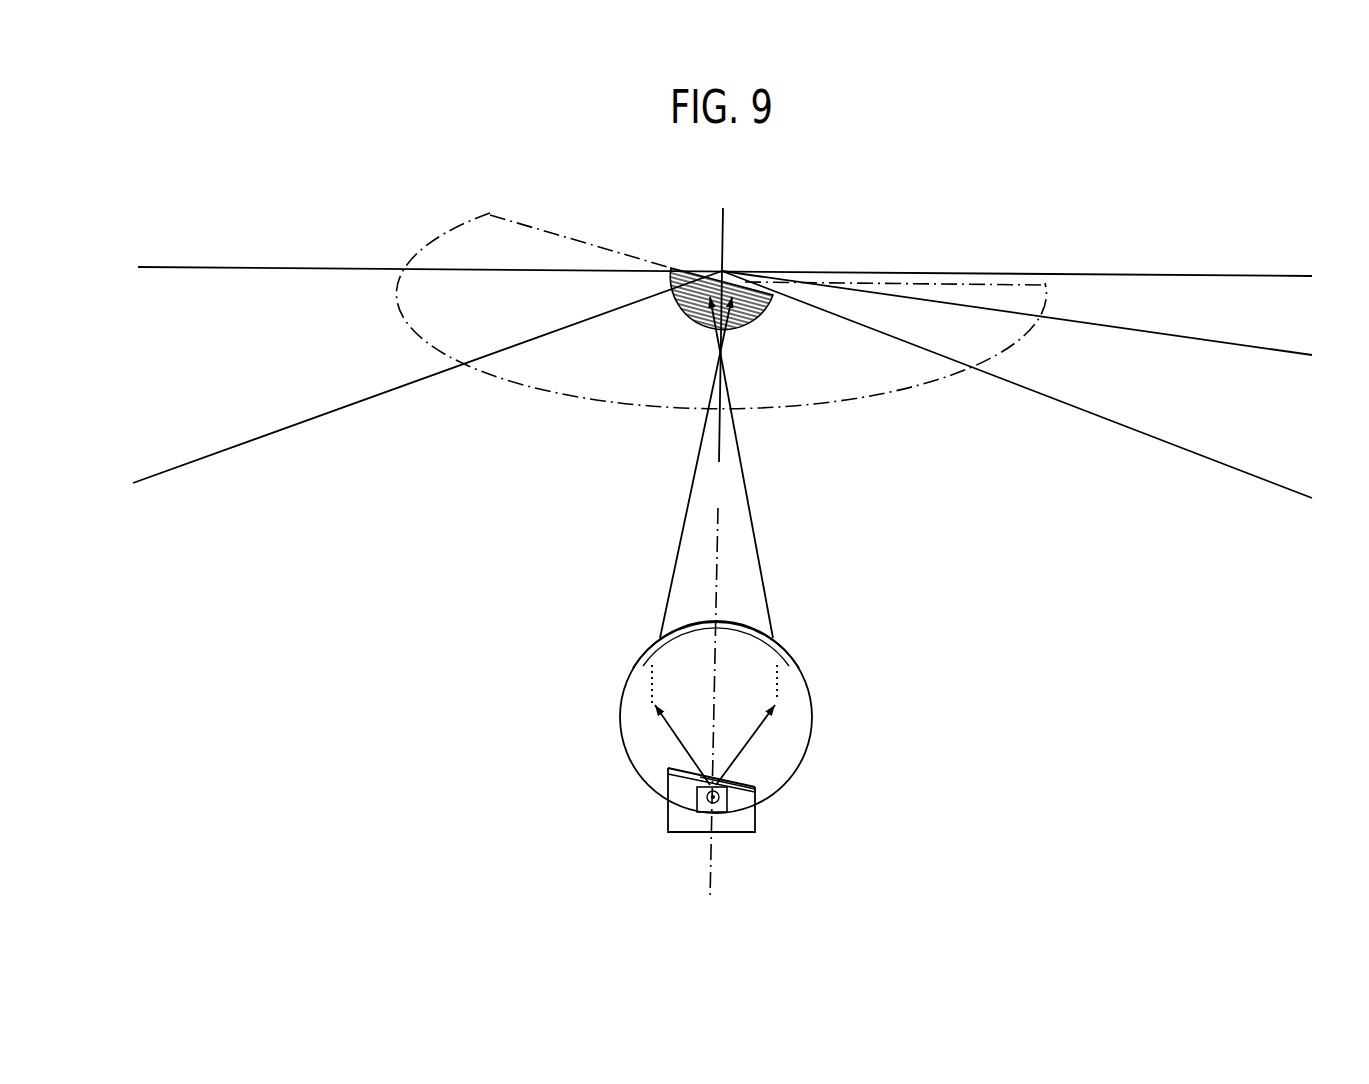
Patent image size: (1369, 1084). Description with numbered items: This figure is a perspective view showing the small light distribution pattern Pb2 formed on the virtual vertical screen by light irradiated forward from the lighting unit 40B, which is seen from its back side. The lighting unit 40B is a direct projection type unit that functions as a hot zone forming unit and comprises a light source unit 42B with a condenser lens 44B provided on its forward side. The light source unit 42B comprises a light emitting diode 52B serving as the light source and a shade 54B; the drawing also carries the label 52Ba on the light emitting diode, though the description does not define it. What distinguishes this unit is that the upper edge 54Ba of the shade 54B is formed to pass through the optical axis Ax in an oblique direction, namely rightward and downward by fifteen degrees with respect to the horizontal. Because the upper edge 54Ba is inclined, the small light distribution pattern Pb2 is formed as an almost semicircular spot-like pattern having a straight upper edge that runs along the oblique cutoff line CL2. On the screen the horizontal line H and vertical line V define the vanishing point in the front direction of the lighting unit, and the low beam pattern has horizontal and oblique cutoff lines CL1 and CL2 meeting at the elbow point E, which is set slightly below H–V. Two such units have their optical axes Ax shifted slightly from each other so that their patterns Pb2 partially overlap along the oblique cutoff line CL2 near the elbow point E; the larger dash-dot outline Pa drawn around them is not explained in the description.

The lighting unit 40B is at (932, 738).
The light source unit 42B is at (598, 782).
The condenser lens 44B is at (608, 668).
The light emitting diode 52B is at (737, 802).
The light emitting chip 52Ba is at (707, 806).
The shade 54B is at (665, 812).
The upper edge of the shade 54Ba is at (737, 780).
The optical axis Ax is at (713, 562).
The elbow point E is at (733, 263).
The horizontal line H is at (720, 274).
The vertical line V is at (721, 340).
The horizontal cutoff line CL1 is at (886, 285).
The oblique cutoff line CL2 is at (583, 238).
The additional light distribution pattern Pa is at (450, 229).
The small light distribution pattern Pb2 is at (757, 340).